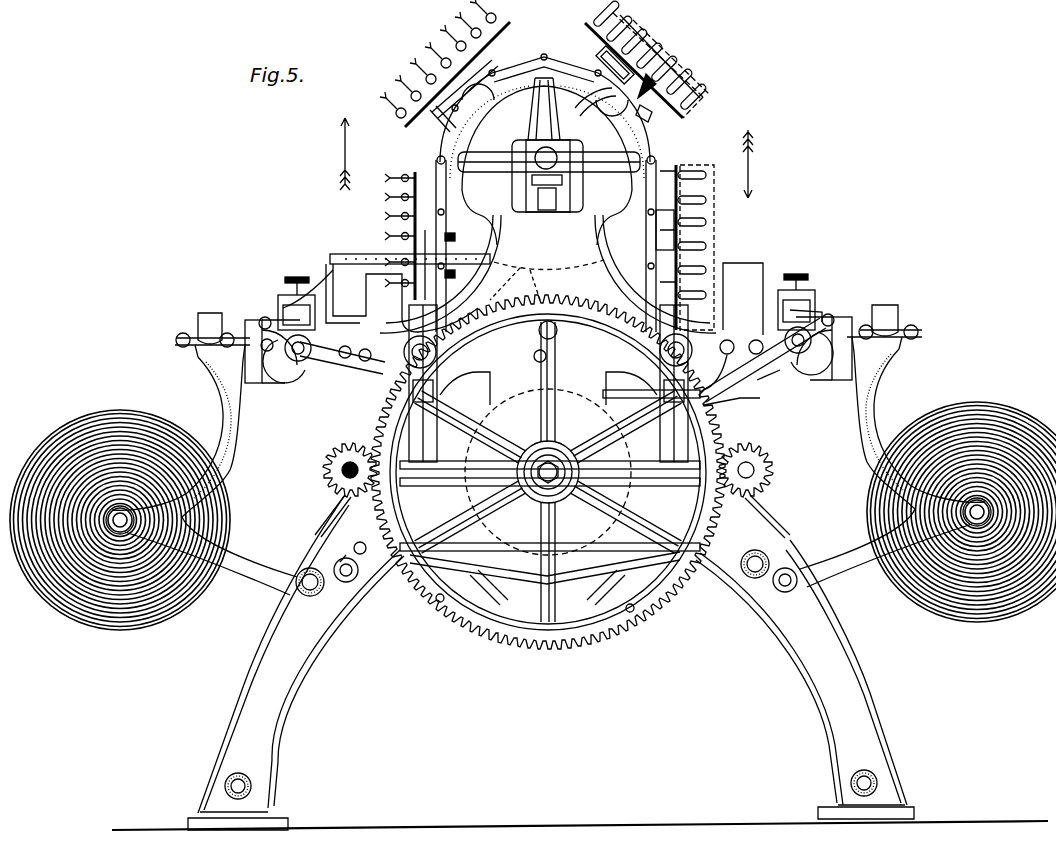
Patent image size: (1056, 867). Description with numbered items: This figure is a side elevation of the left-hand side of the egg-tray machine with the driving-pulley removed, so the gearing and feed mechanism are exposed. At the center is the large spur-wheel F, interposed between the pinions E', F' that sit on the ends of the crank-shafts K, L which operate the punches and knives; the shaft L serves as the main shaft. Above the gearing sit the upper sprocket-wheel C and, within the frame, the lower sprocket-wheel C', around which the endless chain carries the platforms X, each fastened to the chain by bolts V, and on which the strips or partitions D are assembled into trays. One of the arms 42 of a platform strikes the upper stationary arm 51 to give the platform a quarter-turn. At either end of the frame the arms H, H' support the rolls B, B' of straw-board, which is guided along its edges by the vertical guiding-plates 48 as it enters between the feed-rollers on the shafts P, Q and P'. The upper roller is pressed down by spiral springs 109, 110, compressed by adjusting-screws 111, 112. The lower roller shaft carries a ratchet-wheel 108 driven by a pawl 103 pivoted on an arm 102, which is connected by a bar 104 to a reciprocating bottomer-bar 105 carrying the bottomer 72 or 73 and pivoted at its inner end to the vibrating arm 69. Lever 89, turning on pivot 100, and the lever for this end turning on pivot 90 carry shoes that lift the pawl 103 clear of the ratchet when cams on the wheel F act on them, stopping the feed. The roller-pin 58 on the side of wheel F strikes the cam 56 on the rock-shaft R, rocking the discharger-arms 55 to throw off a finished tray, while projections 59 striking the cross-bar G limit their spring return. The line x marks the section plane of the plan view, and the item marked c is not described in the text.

The arm 102 is at (205, 328).
The vertical guiding-plate 48 is at (548, 317).
The pawl 103 is at (255, 318).
The spiral spring 110 is at (286, 297).
The adjusting-screw 111 is at (290, 279).
The bar 104 is at (330, 266).
The bottomer 72 is at (333, 262).
The bottomer-bar 105 is at (515, 316).
The ratchet-wheel 108 is at (292, 372).
The spiral spring 109 is at (822, 312).
The adjusting-screw 112 is at (805, 276).
The pivot 100 is at (775, 374).
The lever 89 is at (760, 392).
The bottomer 73 is at (763, 407).
The pivot 90 is at (383, 368).
The vibrating arm 69 is at (547, 280).
The upper stationary arm 51 is at (595, 112).
The platform arm 42 is at (650, 114).
The discharger-arm 55 is at (530, 580).
The cam 56 is at (438, 603).
The roller-pin 58 is at (632, 612).
The projection 59 is at (333, 553).
The upper sprocket-wheel C is at (548, 193).
The lower sprocket-wheel C' is at (550, 428).
The strip or partition D is at (658, 50).
The platform X is at (551, 66).
The section line x is at (591, 236).
The bolt V is at (425, 283).
The arm H is at (201, 470).
The arm H' is at (895, 462).
The spur-wheel F is at (548, 488).
The pinion F' is at (344, 490).
The pinion E' is at (754, 490).
The main crank-shaft L is at (342, 471).
The crank-shaft K is at (752, 474).
The feed-roller shaft P is at (832, 348).
The feed-roller shaft P' is at (272, 363).
The cross-bar G is at (551, 566).
The rock-shaft R is at (356, 545).
The feed-roller shaft Q is at (542, 341).
The roll of straw-board B is at (961, 520).
The roll of straw-board B' is at (120, 527).
The rack c is at (706, 180).